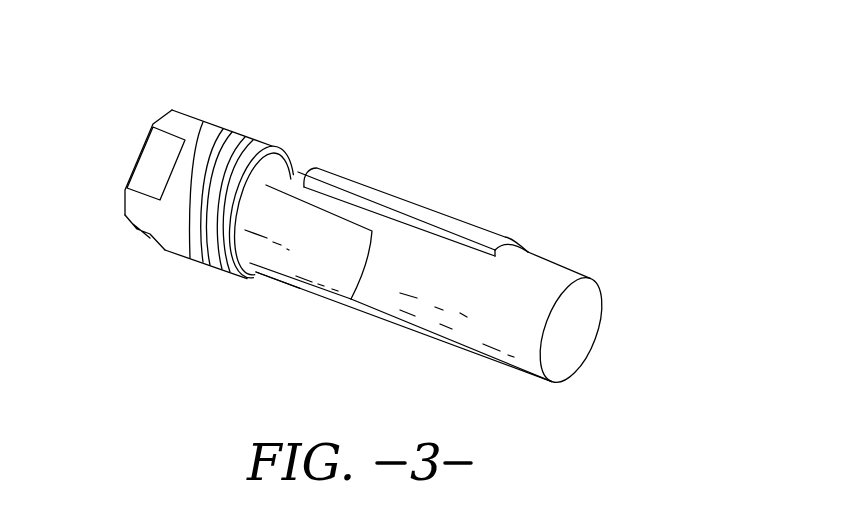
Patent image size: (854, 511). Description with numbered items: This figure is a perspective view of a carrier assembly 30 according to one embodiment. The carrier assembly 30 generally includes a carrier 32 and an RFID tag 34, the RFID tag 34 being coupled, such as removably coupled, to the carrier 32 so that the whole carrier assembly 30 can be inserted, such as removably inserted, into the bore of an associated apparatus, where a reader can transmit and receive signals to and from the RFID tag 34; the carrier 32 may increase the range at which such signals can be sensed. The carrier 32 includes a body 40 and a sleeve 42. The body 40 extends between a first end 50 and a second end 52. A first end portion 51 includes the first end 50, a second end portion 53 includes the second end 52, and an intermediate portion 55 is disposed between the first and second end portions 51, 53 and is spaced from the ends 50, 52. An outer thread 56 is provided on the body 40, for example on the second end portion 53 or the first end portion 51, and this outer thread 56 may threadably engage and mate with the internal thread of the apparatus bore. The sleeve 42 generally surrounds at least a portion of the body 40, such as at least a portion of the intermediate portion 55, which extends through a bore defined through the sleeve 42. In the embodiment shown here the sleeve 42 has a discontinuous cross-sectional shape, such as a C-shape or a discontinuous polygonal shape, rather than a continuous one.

The carrier assembly 30 is at (597, 173).
The carrier 32 is at (226, 108).
The RFID tag 34 is at (452, 208).
The body 40 is at (420, 340).
The sleeve 42 is at (323, 302).
The first end 50 is at (585, 316).
The first end portion 51 is at (482, 358).
The second end 52 is at (136, 157).
The second end portion 53 is at (177, 262).
The intermediate portion 55 is at (277, 285).
The outer thread 56 is at (272, 143).